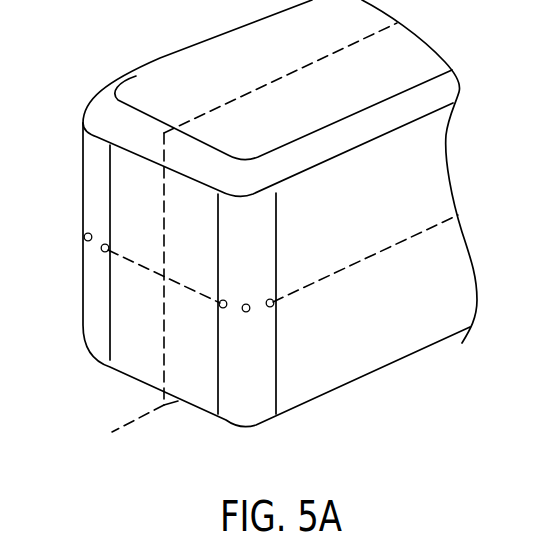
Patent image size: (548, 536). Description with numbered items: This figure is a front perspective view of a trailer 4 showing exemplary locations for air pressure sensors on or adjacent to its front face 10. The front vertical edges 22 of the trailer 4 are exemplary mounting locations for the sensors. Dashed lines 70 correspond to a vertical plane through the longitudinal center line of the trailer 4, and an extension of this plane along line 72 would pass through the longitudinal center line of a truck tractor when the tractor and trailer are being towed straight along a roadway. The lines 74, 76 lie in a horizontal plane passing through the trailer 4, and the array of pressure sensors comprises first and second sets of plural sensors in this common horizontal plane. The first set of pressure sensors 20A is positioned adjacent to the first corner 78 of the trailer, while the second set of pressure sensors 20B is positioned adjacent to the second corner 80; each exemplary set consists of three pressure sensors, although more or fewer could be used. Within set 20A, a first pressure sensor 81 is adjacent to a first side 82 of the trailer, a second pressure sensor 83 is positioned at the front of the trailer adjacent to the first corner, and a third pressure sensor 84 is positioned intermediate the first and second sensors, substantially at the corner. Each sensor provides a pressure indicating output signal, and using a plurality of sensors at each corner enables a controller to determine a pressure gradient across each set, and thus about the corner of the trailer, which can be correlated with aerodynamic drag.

The front face 10 is at (133, 356).
The front vertical edges 22 is at (97, 313).
The second corner 80 is at (97, 162).
The first corner 78 is at (262, 217).
The dashed lines 70 is at (291, 68).
The line 72 is at (118, 433).
The line 76 is at (185, 278).
The line 74 is at (387, 236).
The second set of pressure sensors 20B is at (101, 249).
The first set of pressure sensors 20A is at (224, 308).
The second pressure sensor 83 is at (224, 300).
The third pressure sensor 84 is at (247, 304).
The first pressure sensor 81 is at (273, 299).
The trailer 4 is at (401, 340).
The first side 82 is at (435, 322).